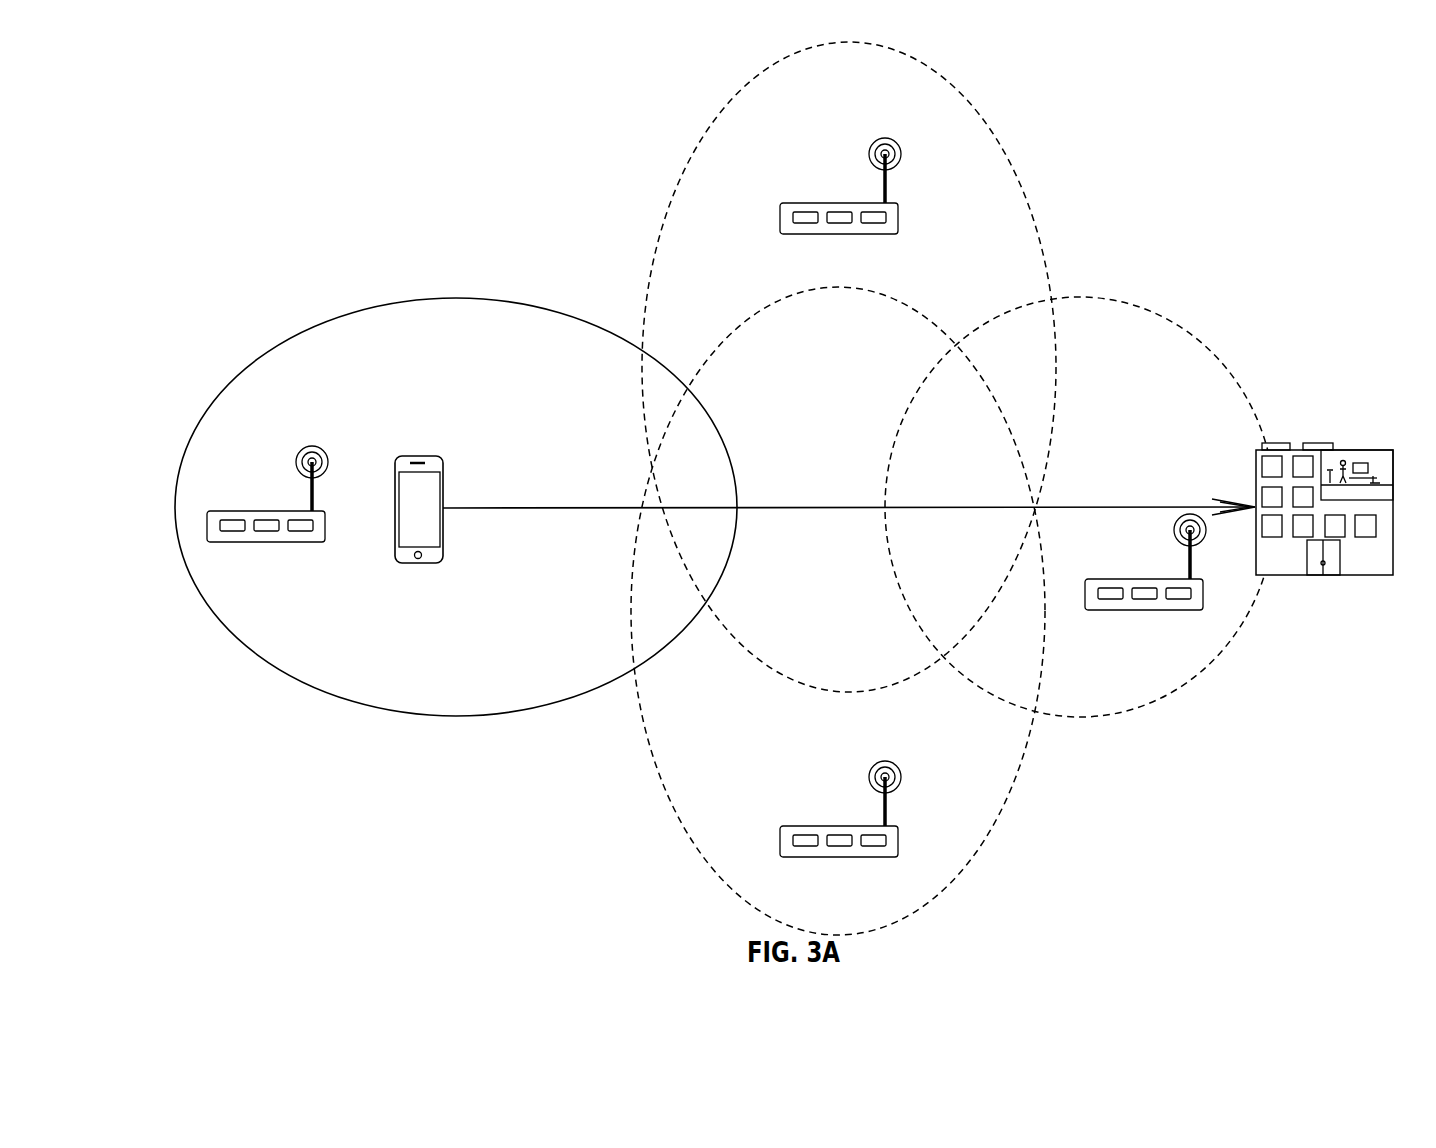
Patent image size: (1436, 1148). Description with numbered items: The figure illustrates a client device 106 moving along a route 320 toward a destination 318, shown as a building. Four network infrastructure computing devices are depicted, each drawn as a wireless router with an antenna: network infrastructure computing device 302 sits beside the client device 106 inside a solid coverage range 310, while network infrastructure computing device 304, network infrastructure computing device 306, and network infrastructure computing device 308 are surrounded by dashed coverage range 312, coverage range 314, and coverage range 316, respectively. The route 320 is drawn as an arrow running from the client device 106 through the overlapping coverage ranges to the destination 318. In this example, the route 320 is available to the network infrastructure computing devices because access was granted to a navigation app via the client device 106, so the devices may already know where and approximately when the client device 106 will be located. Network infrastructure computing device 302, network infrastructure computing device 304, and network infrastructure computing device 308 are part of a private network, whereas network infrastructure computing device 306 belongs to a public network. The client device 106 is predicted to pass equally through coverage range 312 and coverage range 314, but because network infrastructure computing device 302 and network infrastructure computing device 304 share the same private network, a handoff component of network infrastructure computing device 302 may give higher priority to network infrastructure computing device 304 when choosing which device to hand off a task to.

The client device 106 is at (427, 457).
The network infrastructure computing device 302 is at (267, 543).
The network infrastructure computing device 304 is at (833, 235).
The network infrastructure computing device 306 is at (837, 857).
The network infrastructure computing device 308 is at (1142, 609).
The coverage range 310 is at (463, 298).
The coverage range 312 is at (675, 200).
The coverage range 314 is at (658, 770).
The coverage range 316 is at (1190, 333).
The destination 318 is at (1328, 443).
The route 320 is at (840, 510).